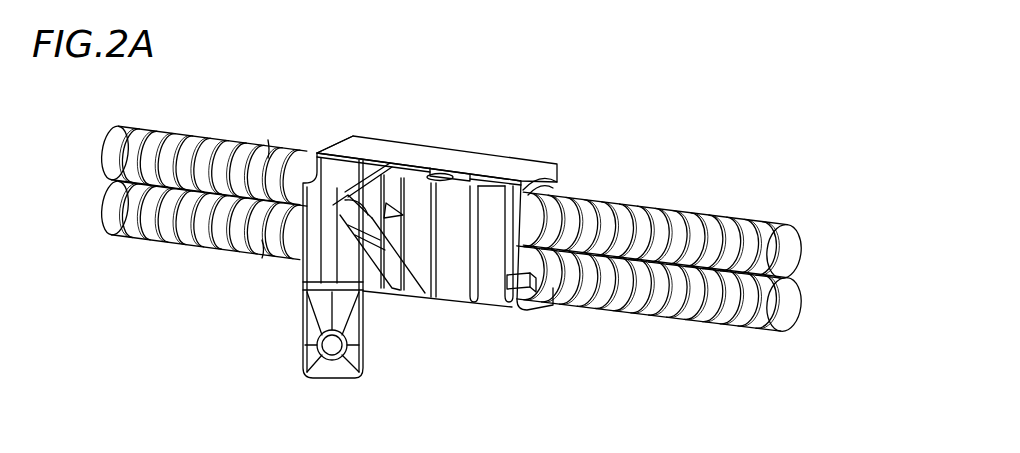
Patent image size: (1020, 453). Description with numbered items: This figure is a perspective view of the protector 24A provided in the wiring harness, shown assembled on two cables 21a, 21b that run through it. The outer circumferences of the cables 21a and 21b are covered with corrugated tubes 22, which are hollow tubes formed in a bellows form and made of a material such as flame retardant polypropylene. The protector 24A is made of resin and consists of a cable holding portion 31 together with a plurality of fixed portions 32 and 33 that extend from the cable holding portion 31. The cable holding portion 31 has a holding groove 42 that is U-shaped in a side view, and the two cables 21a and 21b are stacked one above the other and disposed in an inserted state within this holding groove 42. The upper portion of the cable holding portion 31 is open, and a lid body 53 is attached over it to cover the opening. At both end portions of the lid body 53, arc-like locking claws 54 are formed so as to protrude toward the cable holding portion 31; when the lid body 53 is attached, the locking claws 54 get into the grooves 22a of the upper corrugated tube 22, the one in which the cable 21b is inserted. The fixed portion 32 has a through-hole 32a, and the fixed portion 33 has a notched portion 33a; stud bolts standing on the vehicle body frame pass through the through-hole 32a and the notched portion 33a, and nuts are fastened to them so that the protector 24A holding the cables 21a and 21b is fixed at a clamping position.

The corrugated tube 22 is at (183, 132).
The groove of corrugated tube 22a is at (268, 138).
The cable 21a is at (678, 310).
The cable 21b is at (690, 217).
The protector 24A is at (472, 238).
The cable holding portion 31 is at (450, 287).
The fixed portion 32 is at (305, 293).
The through-hole 32a is at (318, 373).
The fixed portion 33 is at (345, 218).
The notched portion 33a is at (355, 185).
The holding groove 42 is at (523, 279).
The lid body 53 is at (447, 155).
The locking claw 54 is at (548, 191).